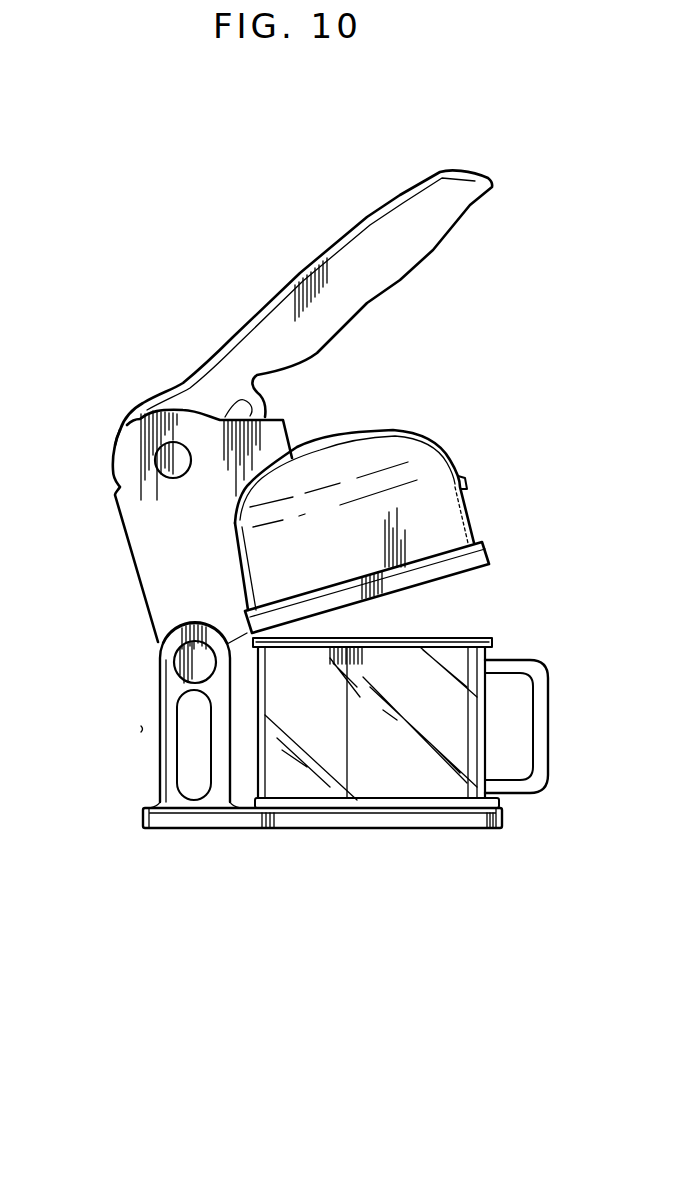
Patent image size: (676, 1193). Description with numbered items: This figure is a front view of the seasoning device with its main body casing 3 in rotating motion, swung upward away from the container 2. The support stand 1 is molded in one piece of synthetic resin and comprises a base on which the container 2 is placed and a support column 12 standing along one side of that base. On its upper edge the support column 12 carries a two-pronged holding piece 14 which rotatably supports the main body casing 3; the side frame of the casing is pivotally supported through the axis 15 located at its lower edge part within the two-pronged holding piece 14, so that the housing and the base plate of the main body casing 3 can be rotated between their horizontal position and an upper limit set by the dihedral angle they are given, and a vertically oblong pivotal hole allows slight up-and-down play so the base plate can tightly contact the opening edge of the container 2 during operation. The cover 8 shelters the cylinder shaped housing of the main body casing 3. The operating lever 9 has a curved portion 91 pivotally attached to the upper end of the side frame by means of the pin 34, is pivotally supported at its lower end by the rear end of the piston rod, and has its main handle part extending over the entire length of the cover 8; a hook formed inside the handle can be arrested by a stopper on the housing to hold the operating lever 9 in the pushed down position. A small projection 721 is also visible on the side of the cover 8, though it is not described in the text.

The support stand 1 is at (237, 829).
The container 2 is at (413, 779).
The main body casing 3 is at (126, 533).
The cover 8 is at (397, 430).
The operating lever 9 is at (363, 221).
The support column 12 is at (165, 772).
The two-pronged holding piece 14 is at (168, 634).
The axis 15 is at (176, 668).
The pin 34 is at (160, 458).
The curved portion 91 is at (127, 425).
The tab 721 is at (461, 480).